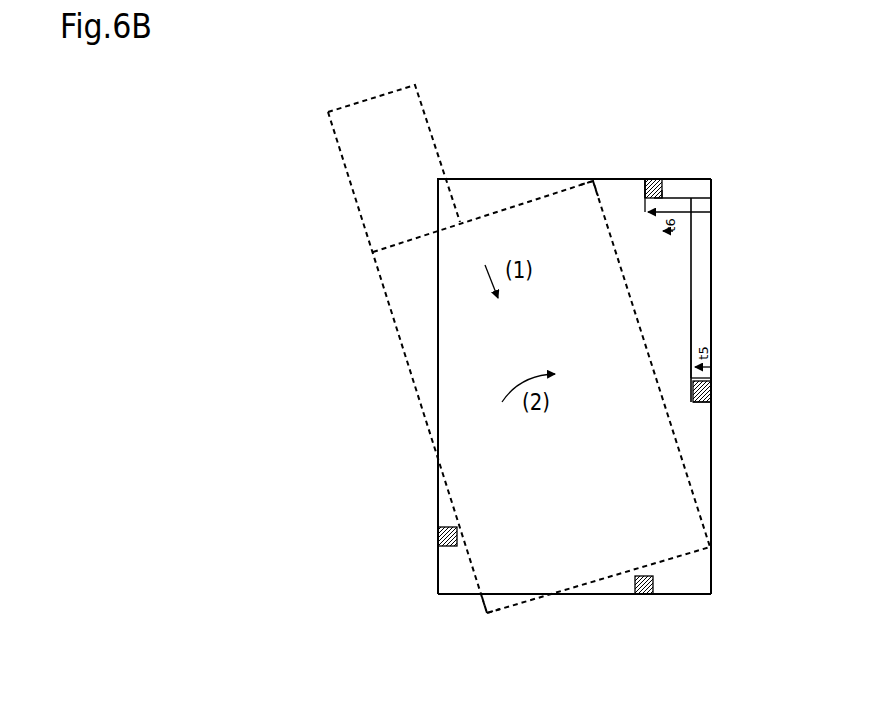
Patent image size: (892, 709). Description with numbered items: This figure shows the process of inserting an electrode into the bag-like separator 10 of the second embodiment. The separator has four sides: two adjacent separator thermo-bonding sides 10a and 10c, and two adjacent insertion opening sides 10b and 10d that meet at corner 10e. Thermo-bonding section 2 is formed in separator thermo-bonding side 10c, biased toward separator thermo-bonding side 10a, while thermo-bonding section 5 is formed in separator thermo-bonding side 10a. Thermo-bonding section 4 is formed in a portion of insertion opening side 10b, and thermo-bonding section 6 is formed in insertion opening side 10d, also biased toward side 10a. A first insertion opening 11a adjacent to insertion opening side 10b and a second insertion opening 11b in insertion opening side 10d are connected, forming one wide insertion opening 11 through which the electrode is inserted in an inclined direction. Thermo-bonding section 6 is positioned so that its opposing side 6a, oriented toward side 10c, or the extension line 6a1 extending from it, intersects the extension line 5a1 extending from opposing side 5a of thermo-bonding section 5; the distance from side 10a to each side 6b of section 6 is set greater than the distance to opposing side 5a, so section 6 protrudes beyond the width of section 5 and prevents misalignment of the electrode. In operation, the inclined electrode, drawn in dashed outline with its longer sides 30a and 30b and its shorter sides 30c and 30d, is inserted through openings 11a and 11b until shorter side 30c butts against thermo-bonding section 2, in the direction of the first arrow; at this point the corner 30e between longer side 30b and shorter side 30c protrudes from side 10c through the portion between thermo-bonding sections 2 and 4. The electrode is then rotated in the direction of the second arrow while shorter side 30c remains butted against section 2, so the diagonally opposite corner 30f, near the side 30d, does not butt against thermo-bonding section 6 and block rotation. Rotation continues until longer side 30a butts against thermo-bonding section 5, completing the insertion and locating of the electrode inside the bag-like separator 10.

The thermo-bonding section 2 is at (648, 596).
The thermo-bonding section 4 is at (438, 537).
The thermo-bonding section 5 is at (701, 368).
The opposing side 5a is at (696, 402).
The extension line 5a1 is at (672, 339).
The thermo-bonding section 6 is at (662, 184).
The opposing side 6a is at (662, 198).
The extension line 6a1 is at (663, 198).
The side 6b is at (645, 195).
The bag-like separator 10 is at (570, 387).
The separator thermo-bonding side 10a is at (712, 460).
The insertion opening side 10b is at (438, 403).
The separator thermo-bonding side 10c is at (590, 597).
The insertion opening side 10d is at (622, 179).
The corner 10e is at (440, 178).
The insertion opening 11 is at (536, 378).
The first insertion opening 11a is at (438, 488).
The second insertion opening 11b is at (533, 178).
The longer side 30a is at (680, 301).
The longer side 30b is at (410, 375).
The shorter side 30c is at (685, 557).
The laminate top edge 30d is at (500, 212).
The corner 30e is at (488, 615).
The corner 30f is at (593, 179).